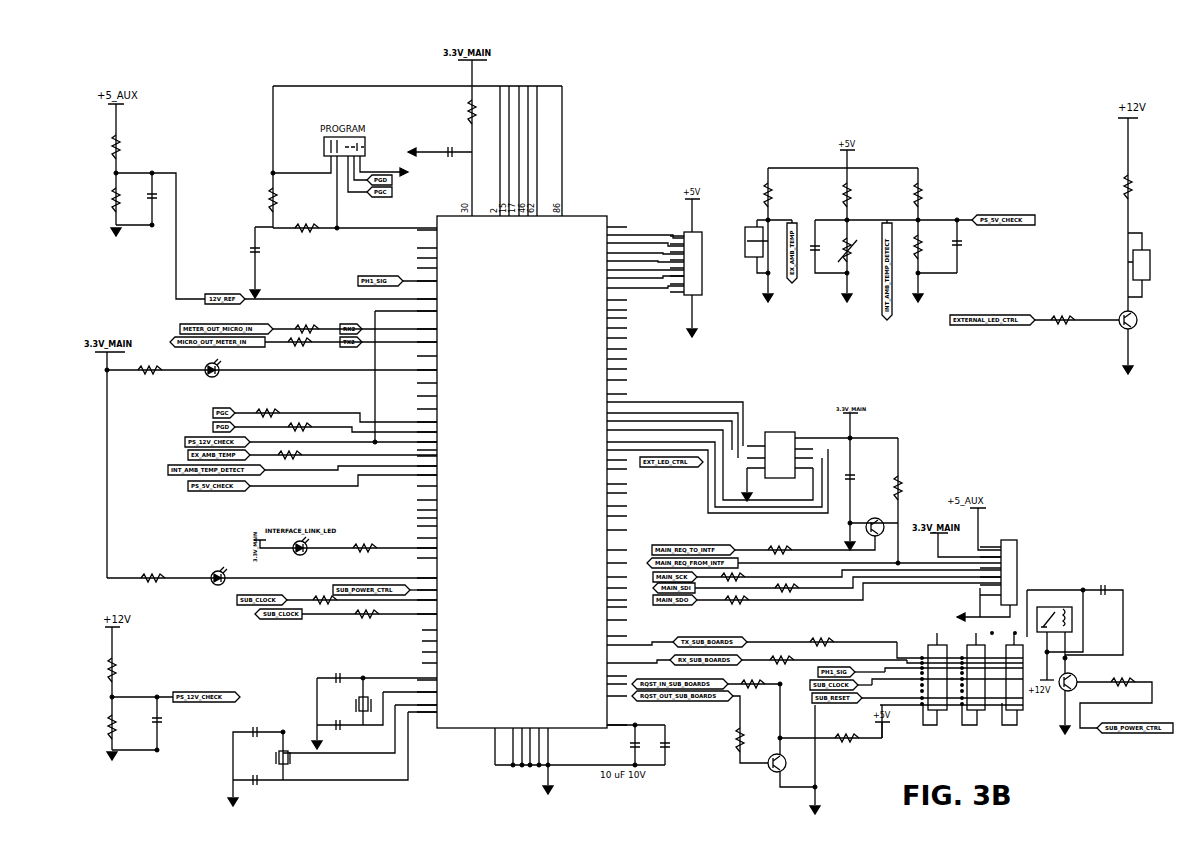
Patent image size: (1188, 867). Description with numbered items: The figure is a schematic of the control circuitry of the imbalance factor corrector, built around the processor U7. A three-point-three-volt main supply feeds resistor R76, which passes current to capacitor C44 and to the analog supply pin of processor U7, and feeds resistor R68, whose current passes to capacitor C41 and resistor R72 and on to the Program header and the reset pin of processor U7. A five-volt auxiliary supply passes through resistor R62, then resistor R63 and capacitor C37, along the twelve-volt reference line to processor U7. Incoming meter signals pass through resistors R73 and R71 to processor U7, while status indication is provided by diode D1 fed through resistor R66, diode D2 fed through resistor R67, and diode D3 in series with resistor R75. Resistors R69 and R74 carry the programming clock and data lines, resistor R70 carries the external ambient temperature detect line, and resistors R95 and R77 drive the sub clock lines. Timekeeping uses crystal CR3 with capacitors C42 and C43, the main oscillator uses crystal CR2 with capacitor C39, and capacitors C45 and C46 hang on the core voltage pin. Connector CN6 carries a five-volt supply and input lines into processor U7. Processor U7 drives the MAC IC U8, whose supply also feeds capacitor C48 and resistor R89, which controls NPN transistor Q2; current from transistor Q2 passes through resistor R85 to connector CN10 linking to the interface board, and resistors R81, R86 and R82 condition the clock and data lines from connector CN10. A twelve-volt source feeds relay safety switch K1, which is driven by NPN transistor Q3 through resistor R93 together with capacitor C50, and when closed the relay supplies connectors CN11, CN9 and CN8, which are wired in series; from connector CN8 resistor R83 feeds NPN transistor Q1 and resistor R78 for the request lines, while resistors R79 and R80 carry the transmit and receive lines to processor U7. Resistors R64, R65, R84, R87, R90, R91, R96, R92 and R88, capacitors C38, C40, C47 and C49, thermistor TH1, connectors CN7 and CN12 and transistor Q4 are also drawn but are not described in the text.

The resistor R62 is at (116, 147).
The resistor R63 is at (116, 201).
The capacitor C37 is at (154, 202).
The capacitor C41 is at (256, 256).
The resistor R68 is at (274, 200).
The resistor R72 is at (305, 230).
The capacitor C44 is at (442, 153).
The resistor R76 is at (474, 112).
The processor U7 is at (518, 500).
The capacitor C45 is at (631, 748).
The capacitor C46 is at (668, 744).
The resistor R73 is at (307, 324).
The resistor R71 is at (300, 347).
The resistor R66 is at (150, 369).
The diode D1 is at (211, 374).
The resistor R69 is at (284, 408).
The resistor R74 is at (307, 433).
The resistor R70 is at (287, 454).
The diode D3 is at (299, 553).
The resistor R75 is at (365, 550).
The resistor R67 is at (152, 573).
The diode D2 is at (191, 577).
The resistor R95 is at (320, 599).
The resistor R77 is at (369, 614).
The capacitor C42 is at (333, 677).
The capacitor C43 is at (333, 727).
The crystal CR3 is at (336, 705).
The capacitor C39 is at (255, 733).
The capacitor C40 is at (255, 785).
The crystal CR2 is at (284, 756).
The resistor R64 is at (112, 671).
The resistor R65 is at (112, 728).
The capacitor C38 is at (157, 729).
The connector CN6 is at (690, 255).
The resistor R84 is at (770, 195).
The resistor R87 is at (850, 195).
The resistor R90 is at (918, 195).
The thermistor TH1 is at (850, 250).
The resistor R91 is at (918, 249).
The external ambient temperature connector CN7 is at (749, 256).
The capacitor C47 is at (815, 255).
The capacitor C49 is at (958, 252).
The resistor R96 is at (1129, 187).
The connector CN12 is at (1150, 266).
The transistor Q4 is at (1122, 314).
The resistor R92 is at (1063, 321).
The MAC IC U8 is at (780, 454).
The capacitor C48 is at (852, 486).
The resistor R89 is at (902, 488).
The NPN transistor Q2 is at (875, 519).
The resistor R85 is at (789, 549).
The resistor R81 is at (742, 576).
The resistor R86 is at (797, 587).
The resistor R82 is at (728, 601).
The connector CN10 is at (1018, 566).
The connector CN8 is at (937, 675).
The connector CN9 is at (976, 675).
The connector CN11 is at (1019, 679).
The resistor R79 is at (821, 636).
The resistor R80 is at (778, 659).
The resistor R83 is at (754, 684).
The resistor R78 is at (743, 740).
The NPN transistor Q1 is at (774, 770).
The resistor R88 is at (847, 739).
The relay safety switch K1 is at (1054, 613).
The capacitor C50 is at (1097, 592).
The NPN transistor Q3 is at (1072, 676).
The resistor R93 is at (1123, 683).